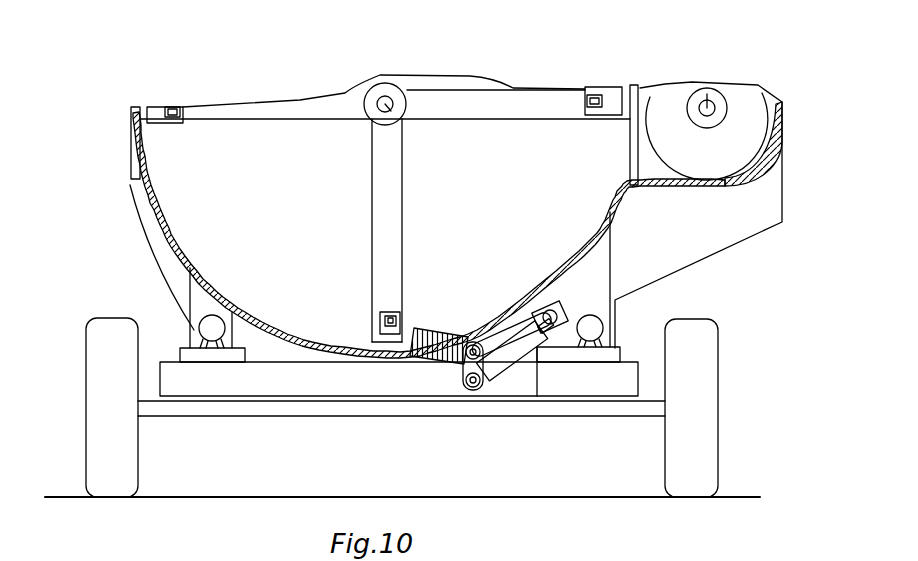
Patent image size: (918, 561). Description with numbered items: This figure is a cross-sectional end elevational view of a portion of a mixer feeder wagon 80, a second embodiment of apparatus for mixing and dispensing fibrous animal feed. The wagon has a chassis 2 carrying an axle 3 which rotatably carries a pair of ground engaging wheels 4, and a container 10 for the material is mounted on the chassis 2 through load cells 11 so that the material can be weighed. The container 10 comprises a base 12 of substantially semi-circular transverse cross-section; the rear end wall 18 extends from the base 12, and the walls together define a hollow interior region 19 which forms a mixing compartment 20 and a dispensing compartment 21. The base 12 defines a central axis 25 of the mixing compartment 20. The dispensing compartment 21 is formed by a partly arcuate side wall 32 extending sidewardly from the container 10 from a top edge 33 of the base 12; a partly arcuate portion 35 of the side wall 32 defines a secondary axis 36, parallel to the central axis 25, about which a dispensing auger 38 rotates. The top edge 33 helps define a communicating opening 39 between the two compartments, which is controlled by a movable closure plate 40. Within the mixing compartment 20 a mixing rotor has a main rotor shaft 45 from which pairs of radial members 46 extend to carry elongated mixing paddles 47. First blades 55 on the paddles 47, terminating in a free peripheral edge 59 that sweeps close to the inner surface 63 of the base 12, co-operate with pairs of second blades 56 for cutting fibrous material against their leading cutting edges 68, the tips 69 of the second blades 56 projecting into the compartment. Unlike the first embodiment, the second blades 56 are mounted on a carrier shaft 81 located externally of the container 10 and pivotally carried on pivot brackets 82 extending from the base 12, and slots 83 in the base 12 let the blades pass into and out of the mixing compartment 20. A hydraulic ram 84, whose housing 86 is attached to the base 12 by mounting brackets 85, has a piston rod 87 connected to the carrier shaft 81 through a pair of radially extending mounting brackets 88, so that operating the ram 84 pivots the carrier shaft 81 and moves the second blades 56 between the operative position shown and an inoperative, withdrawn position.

The mixer feeder wagon 80 is at (94, 92).
The chassis 2 is at (625, 374).
The axle 3 is at (614, 411).
The ground engaging wheels 4 is at (128, 464).
The container 10 is at (400, 235).
The load cells 11 is at (200, 330).
The base 12 is at (168, 243).
The rear end wall 18 is at (309, 233).
The hollow interior region 19 is at (208, 223).
The mixing compartment 20 is at (257, 447).
The dispensing compartment 21 is at (665, 165).
The central axis 25 is at (372, 115).
The partly arcuate side wall 32 is at (732, 186).
The top edge 33 is at (628, 200).
The partly arcuate portion 35 is at (785, 132).
The secondary axis 36 is at (707, 102).
The dispensing auger 38 is at (742, 106).
The communicating opening 39 is at (616, 194).
The closure plate 40 is at (632, 146).
The main rotor shaft 45 is at (400, 111).
The radial members 46 is at (254, 112).
The mixing paddles 47 is at (180, 108).
The first blades 55 is at (150, 124).
The second blades 56 is at (452, 394).
The free peripheral edge 59 is at (130, 140).
The inner surface 63 is at (238, 432).
The leading cutting edge 68 is at (348, 350).
The tips 69 is at (420, 330).
The carrier shaft 81 is at (470, 345).
The pivot brackets 82 is at (498, 332).
The slots 83 is at (404, 350).
The hydraulic ram 84 is at (534, 345).
The mounting brackets 85 is at (556, 308).
The housing 86 is at (530, 340).
The piston rod 87 is at (486, 392).
The mounting brackets 88 is at (466, 390).